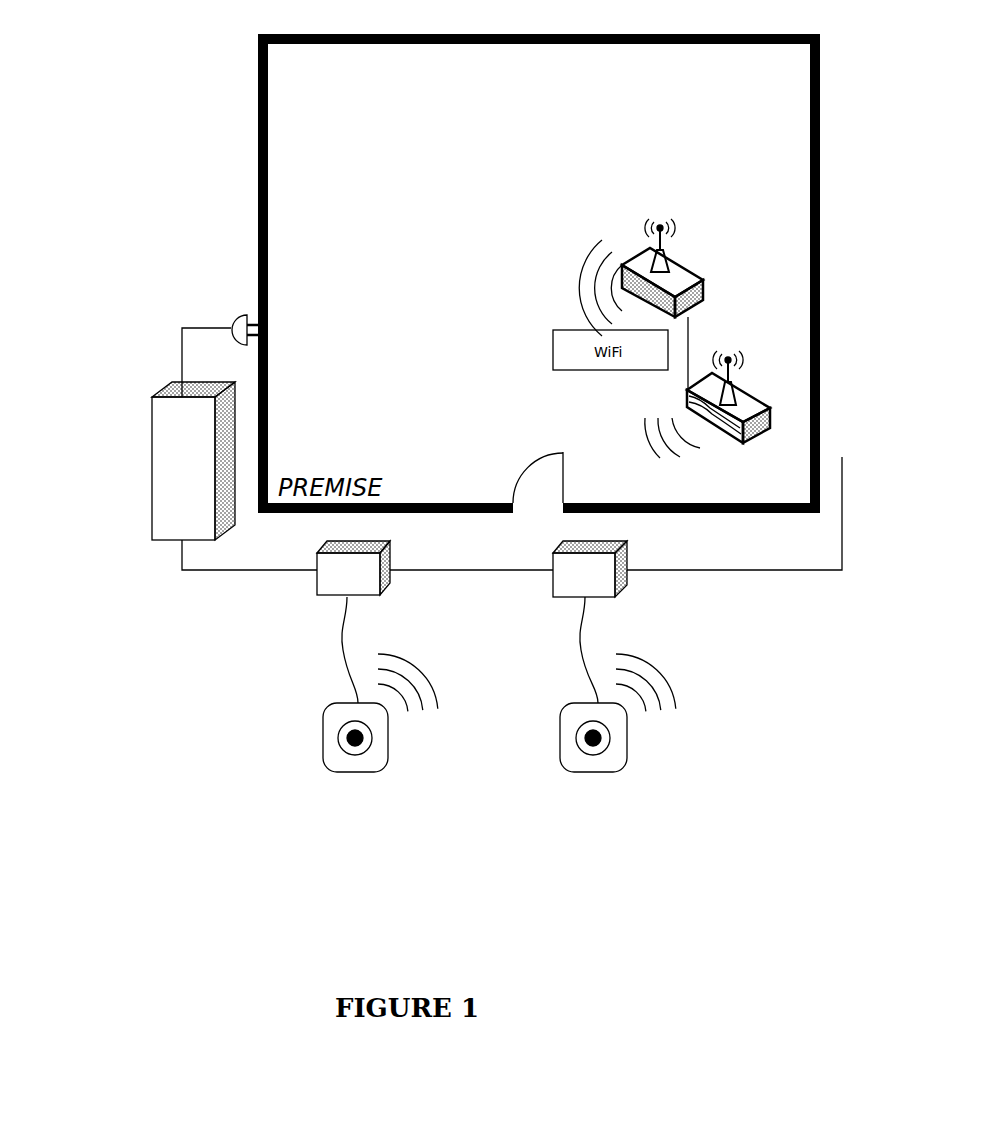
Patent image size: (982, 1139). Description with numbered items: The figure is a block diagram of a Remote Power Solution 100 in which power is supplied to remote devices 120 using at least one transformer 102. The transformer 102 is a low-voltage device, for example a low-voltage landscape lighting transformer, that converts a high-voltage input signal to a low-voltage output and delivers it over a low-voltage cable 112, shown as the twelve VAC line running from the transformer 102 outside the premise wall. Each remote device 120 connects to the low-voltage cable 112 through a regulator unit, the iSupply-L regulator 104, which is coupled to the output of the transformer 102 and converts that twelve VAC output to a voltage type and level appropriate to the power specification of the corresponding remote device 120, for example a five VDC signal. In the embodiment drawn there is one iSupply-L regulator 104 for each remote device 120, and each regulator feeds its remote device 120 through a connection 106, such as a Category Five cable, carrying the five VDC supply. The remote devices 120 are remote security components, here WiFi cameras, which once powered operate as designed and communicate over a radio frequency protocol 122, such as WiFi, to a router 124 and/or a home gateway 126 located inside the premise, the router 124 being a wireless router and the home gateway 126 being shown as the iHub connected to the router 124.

The Remote Power Solution 100 is at (78, 101).
The transformer 102 is at (143, 428).
The iSupply-L regulator 104 is at (313, 597).
The connection 106 is at (344, 623).
The low-voltage cable 112 is at (177, 562).
The remote device 120 is at (482, 778).
The radio frequency protocol 122 is at (418, 712).
The router 124 is at (742, 345).
The home gateway 126 is at (688, 222).